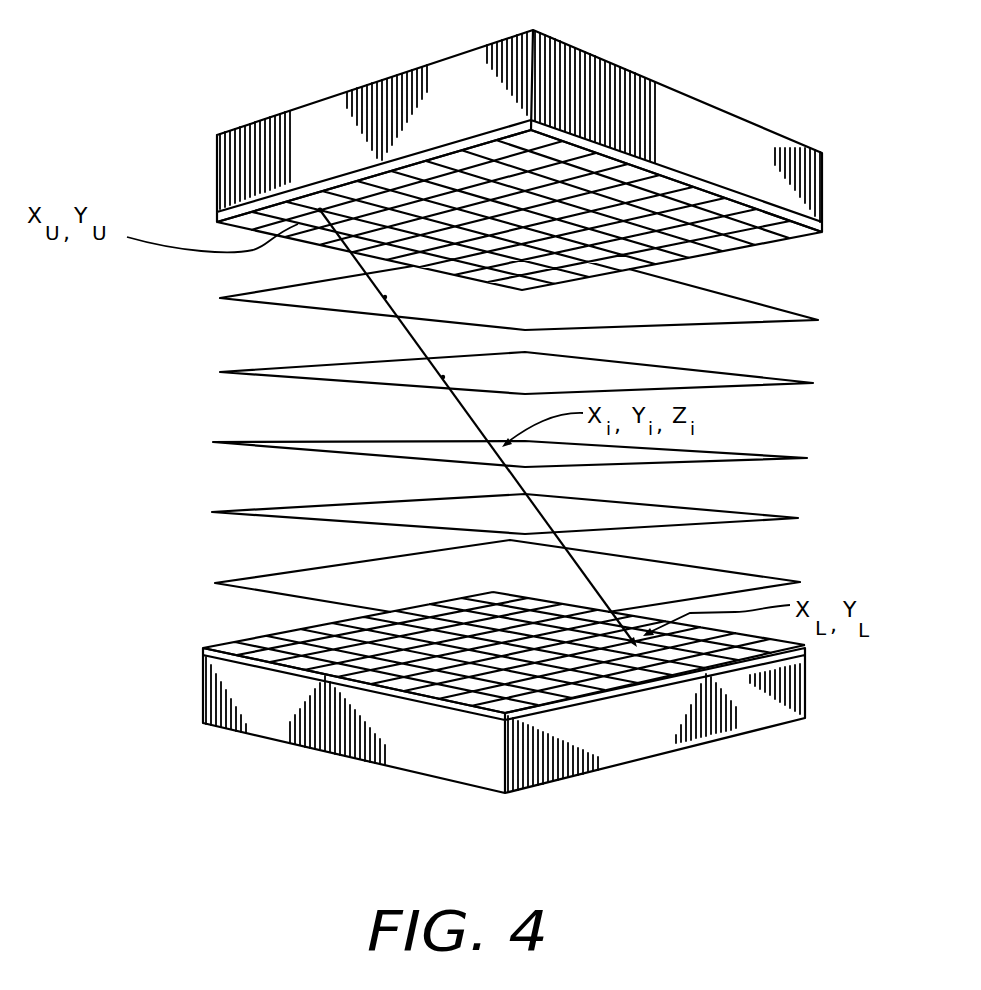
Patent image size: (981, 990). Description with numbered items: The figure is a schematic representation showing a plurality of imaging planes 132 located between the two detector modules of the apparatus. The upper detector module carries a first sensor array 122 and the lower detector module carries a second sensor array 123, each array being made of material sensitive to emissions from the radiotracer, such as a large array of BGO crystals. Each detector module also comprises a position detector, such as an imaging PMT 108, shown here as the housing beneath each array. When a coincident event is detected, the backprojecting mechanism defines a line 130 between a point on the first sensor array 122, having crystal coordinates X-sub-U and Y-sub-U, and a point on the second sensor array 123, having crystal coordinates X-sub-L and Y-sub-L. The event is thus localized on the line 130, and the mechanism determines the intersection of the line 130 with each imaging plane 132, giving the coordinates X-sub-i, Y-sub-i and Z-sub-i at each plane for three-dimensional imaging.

The imaging PMT 108 is at (317, 122).
The first sensor array 122 is at (788, 244).
The second sensor array 123 is at (808, 687).
The line 130 is at (455, 416).
The imaging planes 132 is at (810, 449).